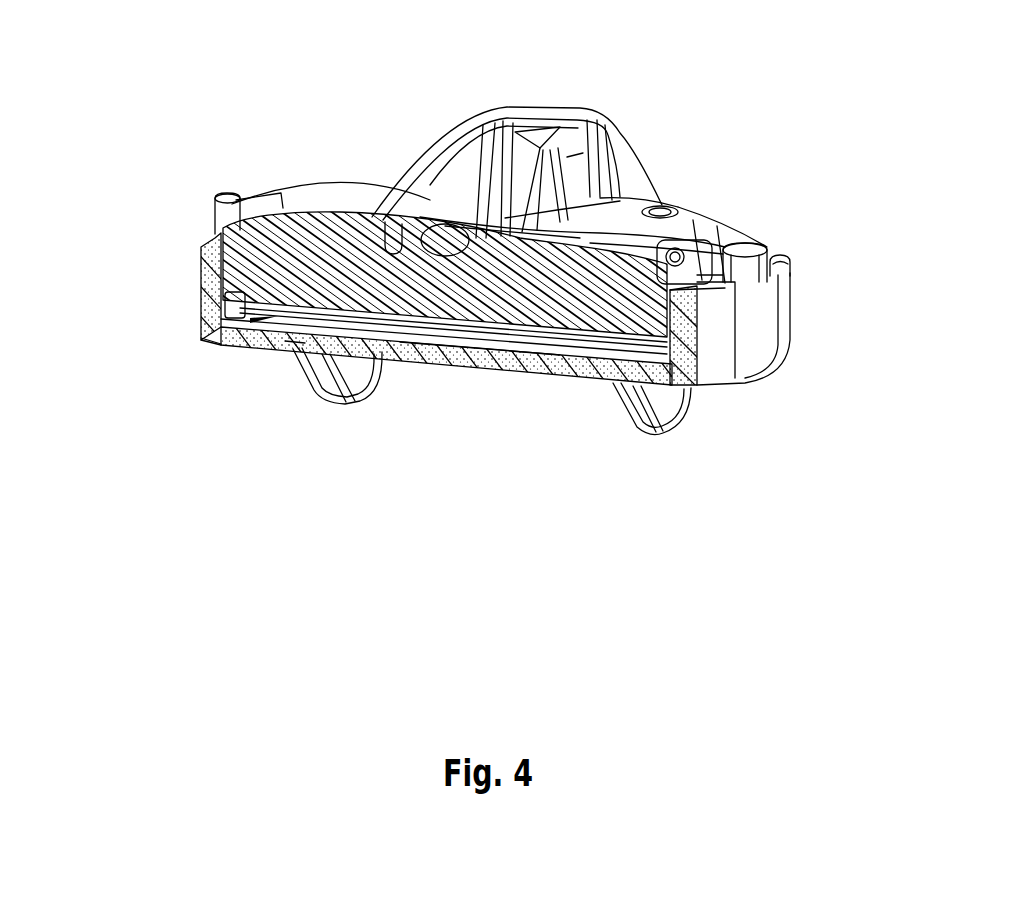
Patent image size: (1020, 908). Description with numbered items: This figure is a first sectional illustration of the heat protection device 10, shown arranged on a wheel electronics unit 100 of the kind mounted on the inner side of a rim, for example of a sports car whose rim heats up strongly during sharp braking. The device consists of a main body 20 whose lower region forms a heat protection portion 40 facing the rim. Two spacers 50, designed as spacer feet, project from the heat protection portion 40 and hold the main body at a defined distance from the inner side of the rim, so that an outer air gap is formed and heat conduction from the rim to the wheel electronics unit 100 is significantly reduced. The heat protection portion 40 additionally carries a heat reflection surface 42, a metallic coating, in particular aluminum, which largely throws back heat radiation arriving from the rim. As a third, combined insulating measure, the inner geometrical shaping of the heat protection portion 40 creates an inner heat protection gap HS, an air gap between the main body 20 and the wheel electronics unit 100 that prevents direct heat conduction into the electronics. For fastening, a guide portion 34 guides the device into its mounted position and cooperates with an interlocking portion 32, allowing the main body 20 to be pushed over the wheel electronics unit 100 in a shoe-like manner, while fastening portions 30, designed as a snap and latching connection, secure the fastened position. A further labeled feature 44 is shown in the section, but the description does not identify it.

The heat protection device 10 is at (168, 212).
The main body 20 is at (790, 300).
The fastening portions 30 is at (222, 194).
The interlocking portion 32 is at (203, 303).
The guide portion 34 is at (203, 280).
The heat protection portion 40 is at (423, 365).
The heat reflection surface 42 is at (505, 374).
The opening 44 is at (292, 349).
The spacers 50 is at (336, 390).
The wheel electronics unit 100 is at (467, 147).
The inner heat protection gap HS is at (201, 345).